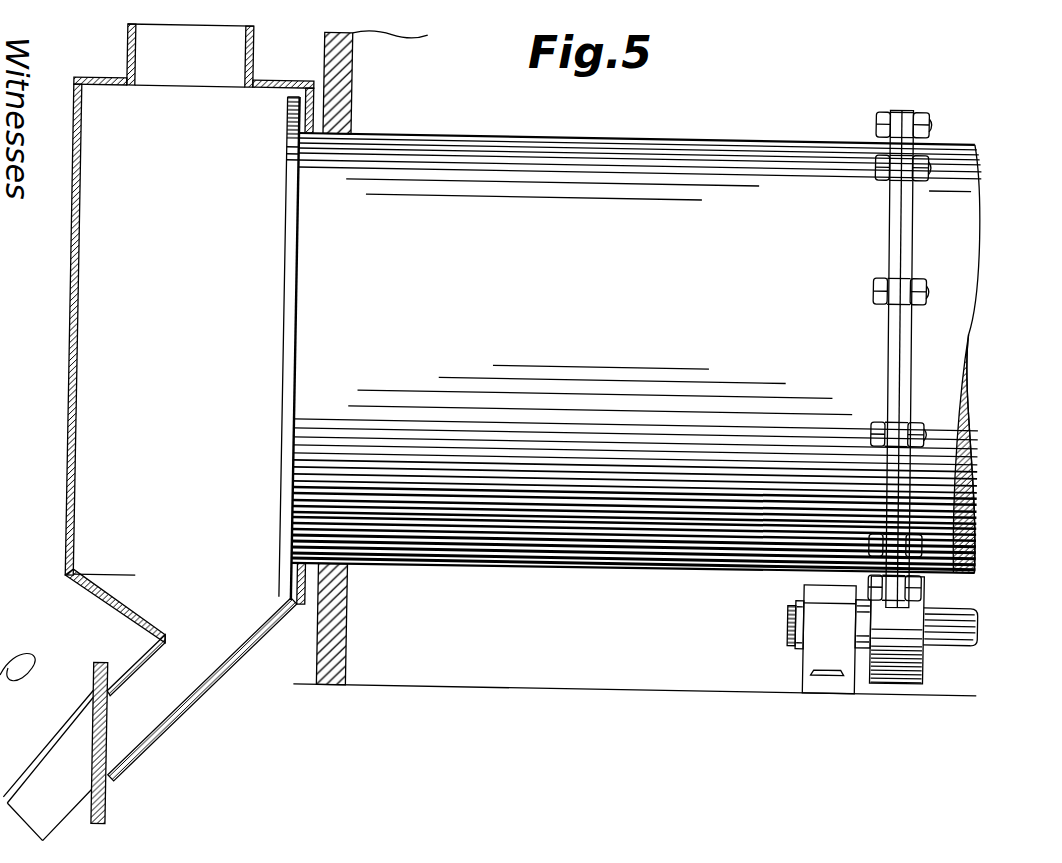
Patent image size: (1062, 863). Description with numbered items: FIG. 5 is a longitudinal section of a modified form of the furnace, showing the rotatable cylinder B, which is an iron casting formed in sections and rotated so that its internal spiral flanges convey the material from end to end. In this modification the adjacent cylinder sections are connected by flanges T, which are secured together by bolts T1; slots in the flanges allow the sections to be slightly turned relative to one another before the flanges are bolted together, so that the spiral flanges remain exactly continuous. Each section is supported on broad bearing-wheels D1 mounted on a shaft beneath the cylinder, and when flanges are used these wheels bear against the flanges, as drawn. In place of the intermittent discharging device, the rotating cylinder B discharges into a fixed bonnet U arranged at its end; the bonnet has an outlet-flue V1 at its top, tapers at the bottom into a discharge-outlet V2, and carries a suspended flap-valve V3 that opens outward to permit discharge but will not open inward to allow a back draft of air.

The fixed bonnet U is at (189, 361).
The hopper inlet neck V1 is at (190, 55).
The discharge chute V2 is at (170, 685).
The chute plate V3 is at (114, 751).
The rotatable cylinder B is at (606, 497).
The flanges T is at (909, 326).
The bolts T1 is at (917, 421).
The bearing-wheels D1 is at (912, 645).